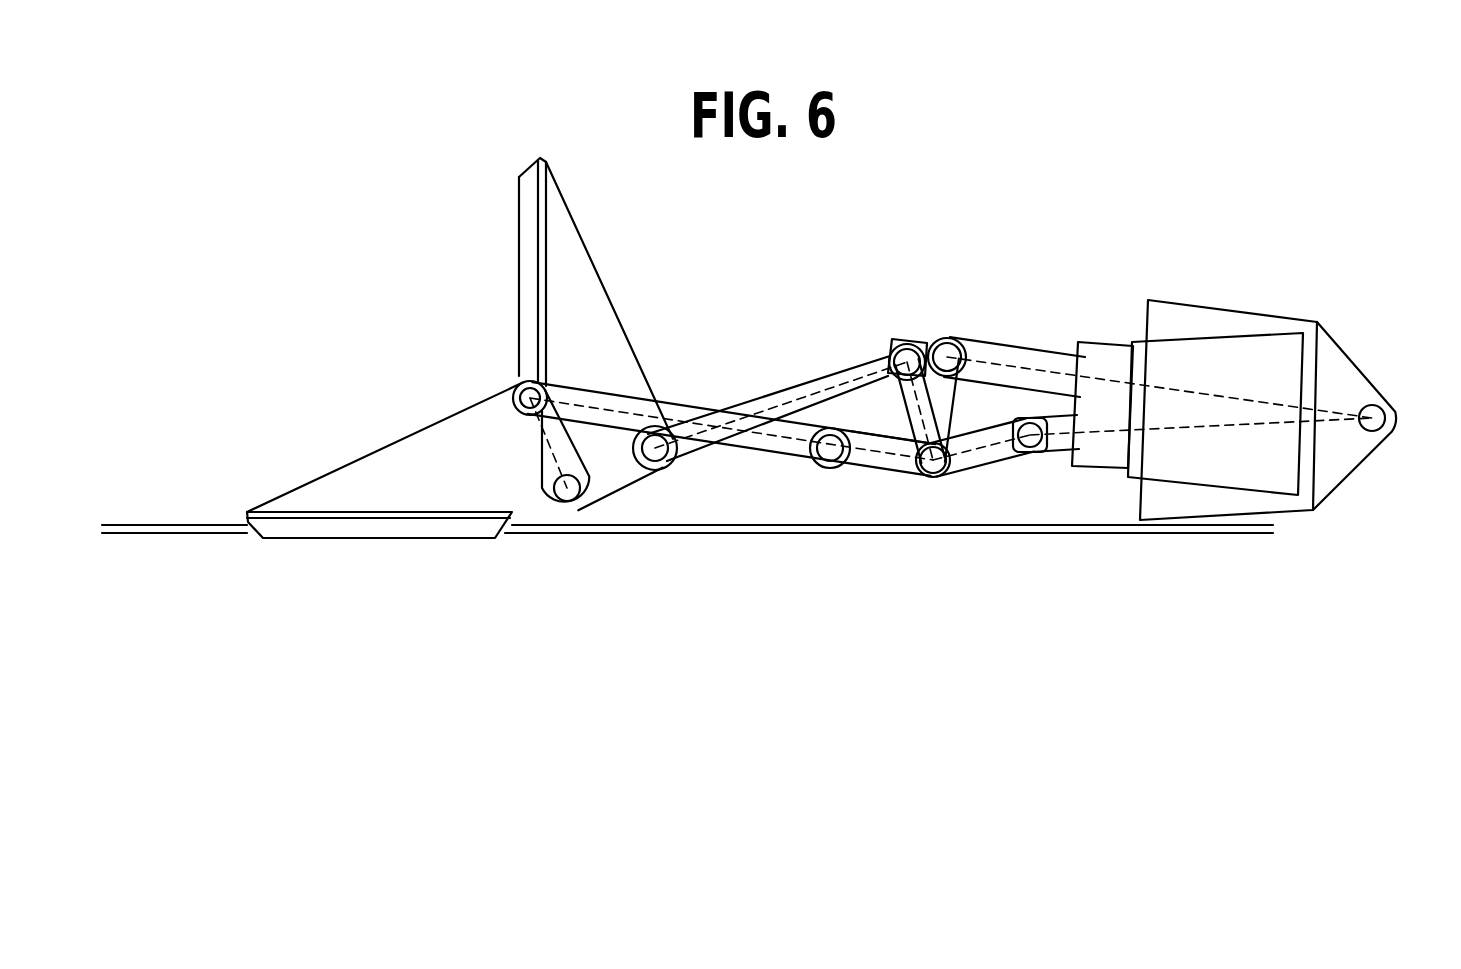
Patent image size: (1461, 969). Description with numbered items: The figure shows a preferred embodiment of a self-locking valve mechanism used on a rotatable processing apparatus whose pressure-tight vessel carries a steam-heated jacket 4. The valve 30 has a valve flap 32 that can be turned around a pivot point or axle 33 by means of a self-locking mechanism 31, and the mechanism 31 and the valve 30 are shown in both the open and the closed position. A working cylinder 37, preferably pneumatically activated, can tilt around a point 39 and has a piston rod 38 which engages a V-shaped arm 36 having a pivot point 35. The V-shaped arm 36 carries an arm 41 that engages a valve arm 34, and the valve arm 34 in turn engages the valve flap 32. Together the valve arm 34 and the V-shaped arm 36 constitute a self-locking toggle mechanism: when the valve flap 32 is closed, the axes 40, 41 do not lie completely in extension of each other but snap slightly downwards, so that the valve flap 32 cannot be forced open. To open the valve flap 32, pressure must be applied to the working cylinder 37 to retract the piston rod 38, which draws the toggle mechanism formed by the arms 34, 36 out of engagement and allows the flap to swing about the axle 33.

The steam-heated jacket 4 is at (724, 535).
The valve 30 is at (360, 214).
The self-locking mechanism 31 is at (940, 170).
The valve flap 32 is at (521, 300).
The axle 33 is at (568, 492).
The valve arm 34 is at (696, 406).
The pivot point 35 is at (937, 480).
The V-shaped arm 36 is at (893, 462).
The working cylinder 37 is at (1176, 318).
The piston rod 38 is at (997, 356).
The tilting point 39 is at (1382, 447).
The axis 40 is at (785, 445).
The arm 41 is at (873, 455).